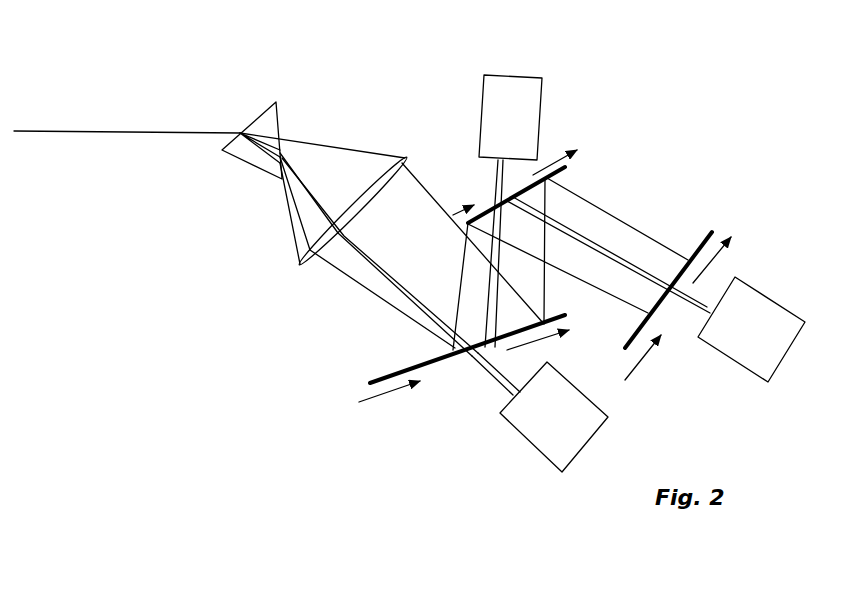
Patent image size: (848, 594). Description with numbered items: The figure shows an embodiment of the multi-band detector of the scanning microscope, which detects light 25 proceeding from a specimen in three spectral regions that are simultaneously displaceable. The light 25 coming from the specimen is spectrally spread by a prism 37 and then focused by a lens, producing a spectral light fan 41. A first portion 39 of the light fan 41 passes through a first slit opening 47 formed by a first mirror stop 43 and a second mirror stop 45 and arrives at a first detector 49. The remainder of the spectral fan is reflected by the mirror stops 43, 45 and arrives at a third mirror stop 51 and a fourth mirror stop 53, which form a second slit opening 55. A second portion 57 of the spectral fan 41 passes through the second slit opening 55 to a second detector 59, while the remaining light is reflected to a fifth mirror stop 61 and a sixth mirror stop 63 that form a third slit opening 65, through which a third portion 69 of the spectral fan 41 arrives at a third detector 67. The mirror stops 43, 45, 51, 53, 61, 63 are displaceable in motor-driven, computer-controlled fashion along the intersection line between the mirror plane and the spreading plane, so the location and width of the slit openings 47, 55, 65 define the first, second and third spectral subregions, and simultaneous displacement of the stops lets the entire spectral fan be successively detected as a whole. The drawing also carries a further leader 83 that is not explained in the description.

The light 25 is at (115, 132).
The prism 37 is at (270, 120).
The first portion 39 is at (378, 182).
The light fan 41 is at (387, 242).
The first mirror stop 43 is at (407, 366).
The second mirror stop 45 is at (548, 318).
The first slit opening 47 is at (472, 355).
The first detector 49 is at (537, 427).
The third mirror stop 51 is at (488, 208).
The fourth mirror stop 53 is at (562, 172).
The second slit opening 55 is at (502, 201).
The second portion 57 is at (497, 183).
The second detector 59 is at (490, 103).
The fifth mirror stop 61 is at (635, 333).
The sixth mirror stop 63 is at (700, 241).
The third slit opening 65 is at (692, 292).
The third detector 67 is at (770, 323).
The third portion 69 is at (697, 312).
The beam to first detector 83 is at (490, 356).